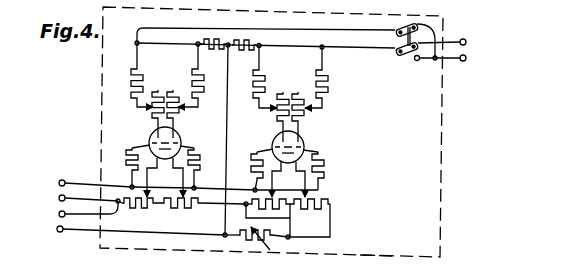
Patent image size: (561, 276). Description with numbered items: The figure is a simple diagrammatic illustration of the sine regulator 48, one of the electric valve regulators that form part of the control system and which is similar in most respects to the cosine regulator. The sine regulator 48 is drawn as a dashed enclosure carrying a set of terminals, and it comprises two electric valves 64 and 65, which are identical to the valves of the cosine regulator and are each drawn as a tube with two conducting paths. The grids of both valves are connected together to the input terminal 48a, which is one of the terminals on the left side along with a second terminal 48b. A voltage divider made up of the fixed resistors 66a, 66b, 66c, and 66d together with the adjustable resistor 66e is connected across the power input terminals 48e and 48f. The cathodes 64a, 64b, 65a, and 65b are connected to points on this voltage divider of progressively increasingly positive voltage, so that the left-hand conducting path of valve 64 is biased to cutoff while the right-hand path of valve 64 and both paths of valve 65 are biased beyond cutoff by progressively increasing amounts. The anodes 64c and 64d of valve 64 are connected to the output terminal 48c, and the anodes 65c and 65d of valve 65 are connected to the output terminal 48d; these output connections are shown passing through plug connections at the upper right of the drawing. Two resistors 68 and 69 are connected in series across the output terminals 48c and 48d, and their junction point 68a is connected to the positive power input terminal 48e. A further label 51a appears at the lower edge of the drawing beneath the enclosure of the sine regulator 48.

The sine regulator 48 is at (442, 141).
The input terminal 48a is at (59, 183).
The input terminal 48b is at (59, 198).
The output terminal 48c is at (466, 58).
The output terminal 48d is at (466, 42).
The positive power input terminal 48e is at (57, 229).
The power input terminal 48f is at (59, 214).
The panel 51a is at (378, 265).
The electric valve 64 is at (179, 145).
The cathode 64a is at (151, 144).
The cathode 64b is at (182, 148).
The anode 64c is at (157, 130).
The anode 64d is at (175, 131).
The electric valve 65 is at (302, 148).
The cathode 65a is at (274, 149).
The cathode 65b is at (305, 152).
The anode 65c is at (282, 133).
The anode 65d is at (300, 134).
The fixed resistor 66a is at (151, 212).
The fixed resistor 66b is at (189, 212).
The fixed resistor 66c is at (254, 190).
The fixed resistor 66d is at (304, 214).
The adjustable resistor 66e is at (250, 246).
The resistor 68 is at (209, 39).
The junction point 68a is at (228, 47).
The resistor 69 is at (243, 40).